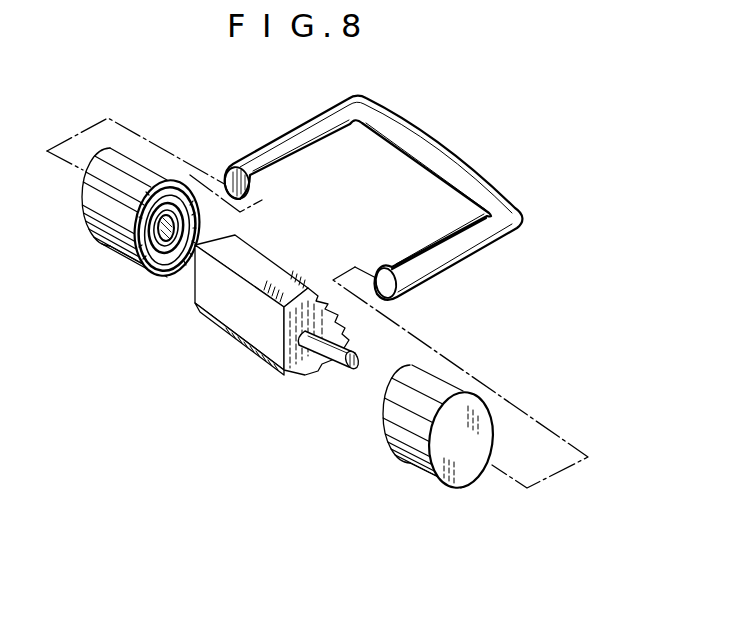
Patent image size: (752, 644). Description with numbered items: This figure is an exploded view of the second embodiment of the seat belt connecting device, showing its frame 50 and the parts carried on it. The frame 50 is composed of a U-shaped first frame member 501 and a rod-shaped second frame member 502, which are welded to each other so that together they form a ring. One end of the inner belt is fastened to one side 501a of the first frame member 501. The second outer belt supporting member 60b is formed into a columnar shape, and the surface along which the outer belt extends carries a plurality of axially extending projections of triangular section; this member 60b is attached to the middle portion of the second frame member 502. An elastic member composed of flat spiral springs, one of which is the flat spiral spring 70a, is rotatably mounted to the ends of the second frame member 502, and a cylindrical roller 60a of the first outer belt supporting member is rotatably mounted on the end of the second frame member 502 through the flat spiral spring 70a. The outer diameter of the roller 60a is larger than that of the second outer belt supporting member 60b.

The frame 50 is at (400, 191).
The first frame member 501 is at (443, 147).
The one side of the first frame member 501a is at (463, 178).
The second frame member 502 is at (320, 363).
The roller 60a is at (388, 438).
The second outer belt supporting member 60b is at (232, 313).
The flat spiral spring 70a is at (167, 250).